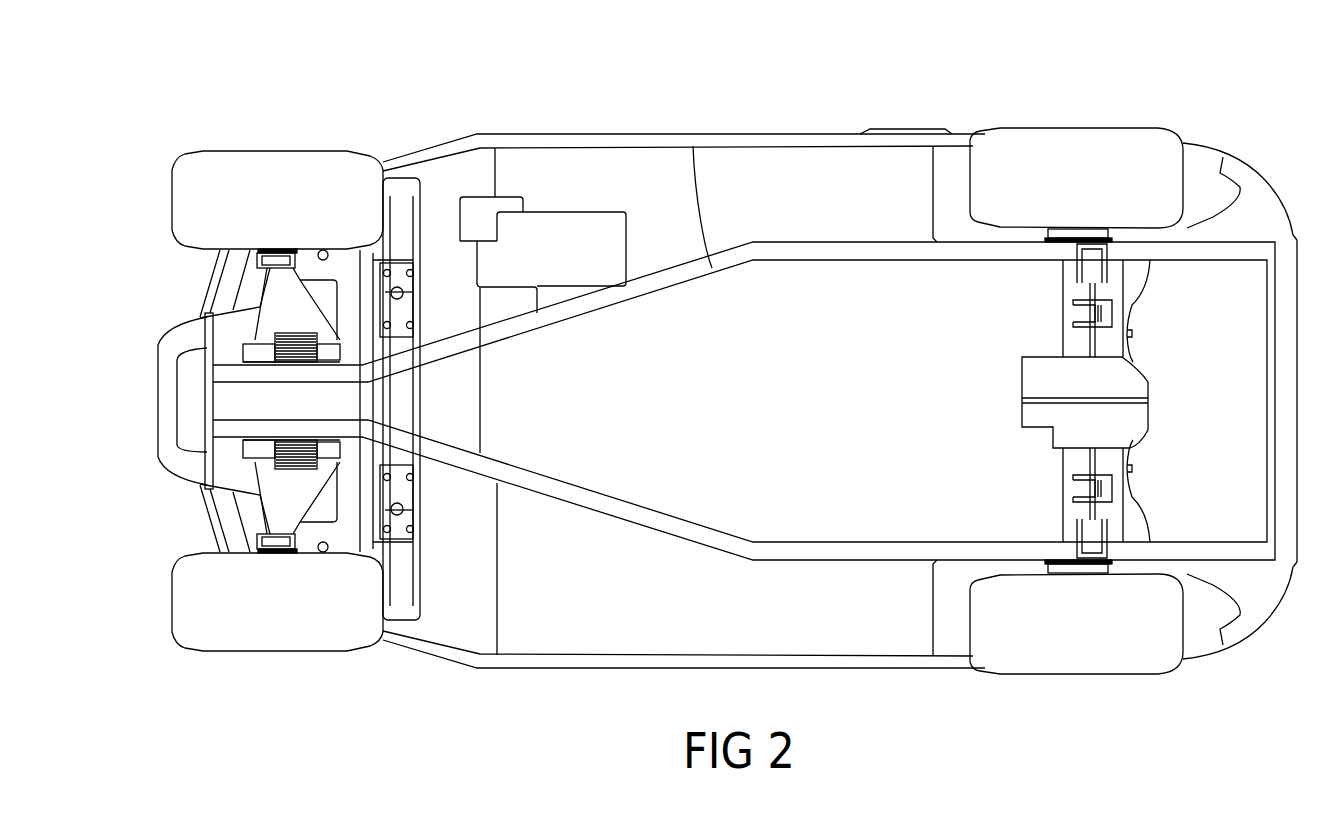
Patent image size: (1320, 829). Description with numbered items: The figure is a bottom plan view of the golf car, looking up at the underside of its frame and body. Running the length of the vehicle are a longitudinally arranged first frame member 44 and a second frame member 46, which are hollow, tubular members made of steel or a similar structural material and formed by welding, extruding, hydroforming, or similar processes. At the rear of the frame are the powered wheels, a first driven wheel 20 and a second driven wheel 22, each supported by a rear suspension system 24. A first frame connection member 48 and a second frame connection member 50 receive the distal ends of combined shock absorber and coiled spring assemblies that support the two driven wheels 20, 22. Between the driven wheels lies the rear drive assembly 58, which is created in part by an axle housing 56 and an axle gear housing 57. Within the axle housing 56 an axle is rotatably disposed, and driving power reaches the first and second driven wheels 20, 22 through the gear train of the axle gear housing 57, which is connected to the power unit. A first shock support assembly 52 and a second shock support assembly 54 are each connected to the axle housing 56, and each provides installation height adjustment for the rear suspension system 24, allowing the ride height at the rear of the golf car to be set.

The first driven wheel 20 is at (1100, 657).
The second driven wheel 22 is at (1108, 147).
The rear suspension system 24 is at (951, 150).
The first frame member 44 is at (798, 552).
The second frame member 46 is at (715, 262).
The first frame connection member 48 is at (1080, 532).
The second frame connection member 50 is at (1075, 267).
The first shock support assembly 52 is at (1113, 488).
The second shock support assembly 54 is at (1113, 315).
The axle housing 56 is at (1073, 343).
The axle gear housing 57 is at (1148, 388).
The rear drive assembly 58 is at (983, 285).